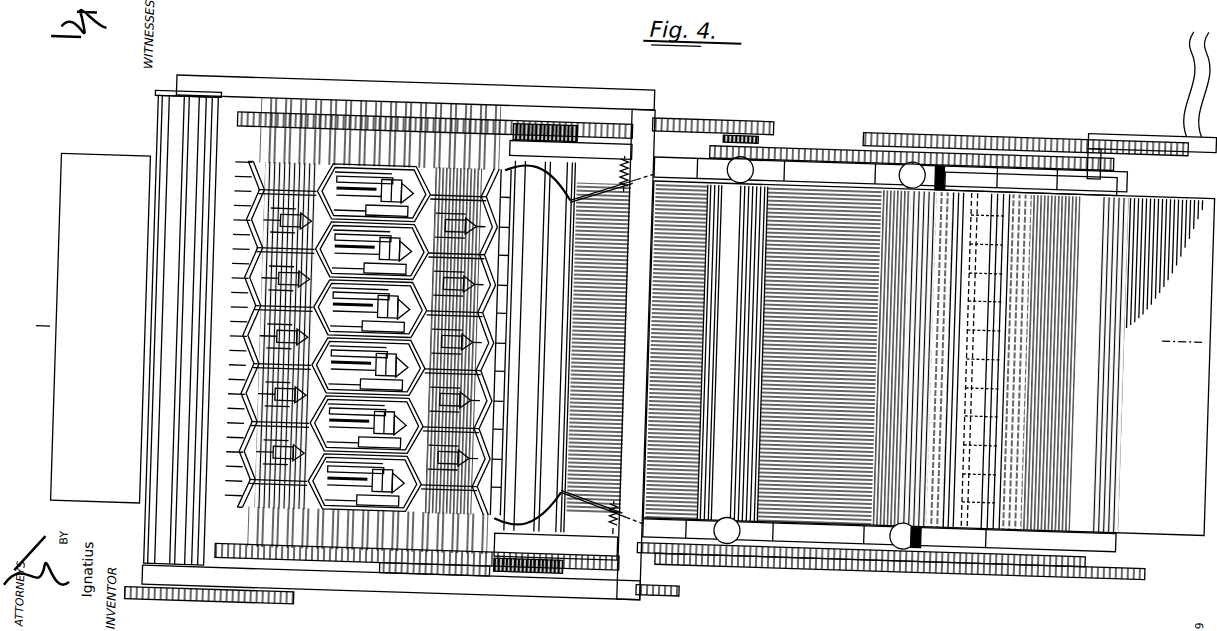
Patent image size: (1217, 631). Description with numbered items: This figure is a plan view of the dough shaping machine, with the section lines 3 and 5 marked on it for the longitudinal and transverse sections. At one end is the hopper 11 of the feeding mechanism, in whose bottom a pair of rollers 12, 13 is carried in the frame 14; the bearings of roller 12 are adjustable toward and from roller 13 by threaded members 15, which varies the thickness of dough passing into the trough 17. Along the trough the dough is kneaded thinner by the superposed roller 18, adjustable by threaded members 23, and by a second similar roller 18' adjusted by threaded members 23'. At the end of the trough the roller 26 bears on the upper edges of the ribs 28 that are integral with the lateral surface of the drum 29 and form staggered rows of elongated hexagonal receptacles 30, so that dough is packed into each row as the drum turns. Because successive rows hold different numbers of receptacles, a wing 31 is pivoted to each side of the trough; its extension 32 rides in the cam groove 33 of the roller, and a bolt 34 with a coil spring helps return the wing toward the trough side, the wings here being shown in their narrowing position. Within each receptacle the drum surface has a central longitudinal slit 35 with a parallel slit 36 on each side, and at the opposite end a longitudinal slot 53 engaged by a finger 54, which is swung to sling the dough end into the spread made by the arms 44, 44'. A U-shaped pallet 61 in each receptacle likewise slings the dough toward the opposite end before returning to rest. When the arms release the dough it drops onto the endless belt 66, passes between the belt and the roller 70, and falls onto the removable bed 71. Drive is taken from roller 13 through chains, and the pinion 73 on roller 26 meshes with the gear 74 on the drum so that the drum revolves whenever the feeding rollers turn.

The section line 3 is at (615, 329).
The section line 5 is at (243, 247).
The hopper 11 is at (1171, 496).
The roller 12 is at (1013, 508).
The roller 13 is at (1112, 434).
The frame 14 is at (835, 530).
The threaded members 15 is at (945, 140).
The trough 17 is at (819, 356).
The roller 18 is at (809, 355).
The roller 18' is at (695, 352).
The threaded members 23 is at (907, 356).
The threaded members 23' is at (885, 355).
The roller 26 is at (568, 347).
The ribs 28 is at (373, 166).
The drum 29 is at (350, 130).
The receptacles 30 is at (277, 482).
The wing 31 is at (605, 182).
The extension 32 is at (579, 190).
The cam groove 33 is at (522, 140).
The bolt 34 is at (648, 160).
The central longitudinal slit 35 is at (295, 460).
The slit 36 is at (346, 496).
The arm 44 is at (515, 342).
The arm 44' is at (450, 353).
The longitudinal slot 53 is at (341, 173).
The finger 54 is at (268, 214).
The pallet 61 is at (421, 166).
The endless belt 66 is at (233, 566).
The roller 70 is at (166, 342).
The removable bed 71 is at (101, 328).
The pinion 73 is at (530, 113).
The gear 74 is at (462, 110).